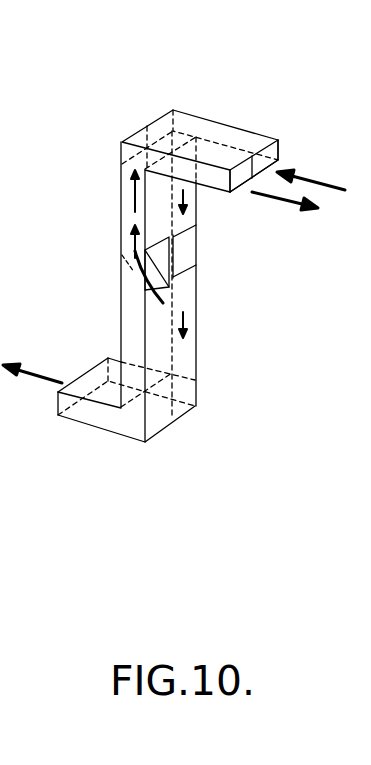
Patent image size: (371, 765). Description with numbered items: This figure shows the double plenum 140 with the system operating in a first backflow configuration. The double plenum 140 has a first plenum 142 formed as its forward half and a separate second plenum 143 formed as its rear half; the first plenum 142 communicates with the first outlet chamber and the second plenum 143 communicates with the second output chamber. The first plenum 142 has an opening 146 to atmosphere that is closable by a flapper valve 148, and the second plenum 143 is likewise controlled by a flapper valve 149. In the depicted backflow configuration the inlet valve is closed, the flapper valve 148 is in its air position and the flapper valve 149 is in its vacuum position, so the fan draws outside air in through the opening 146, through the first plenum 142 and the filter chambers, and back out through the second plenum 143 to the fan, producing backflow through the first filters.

The double plenum 140 is at (144, 109).
The first plenum 142 is at (233, 196).
The second plenum 143 is at (270, 158).
The opening 146 is at (148, 252).
The flapper valve 148 is at (130, 283).
The flapper valve 149 is at (188, 255).